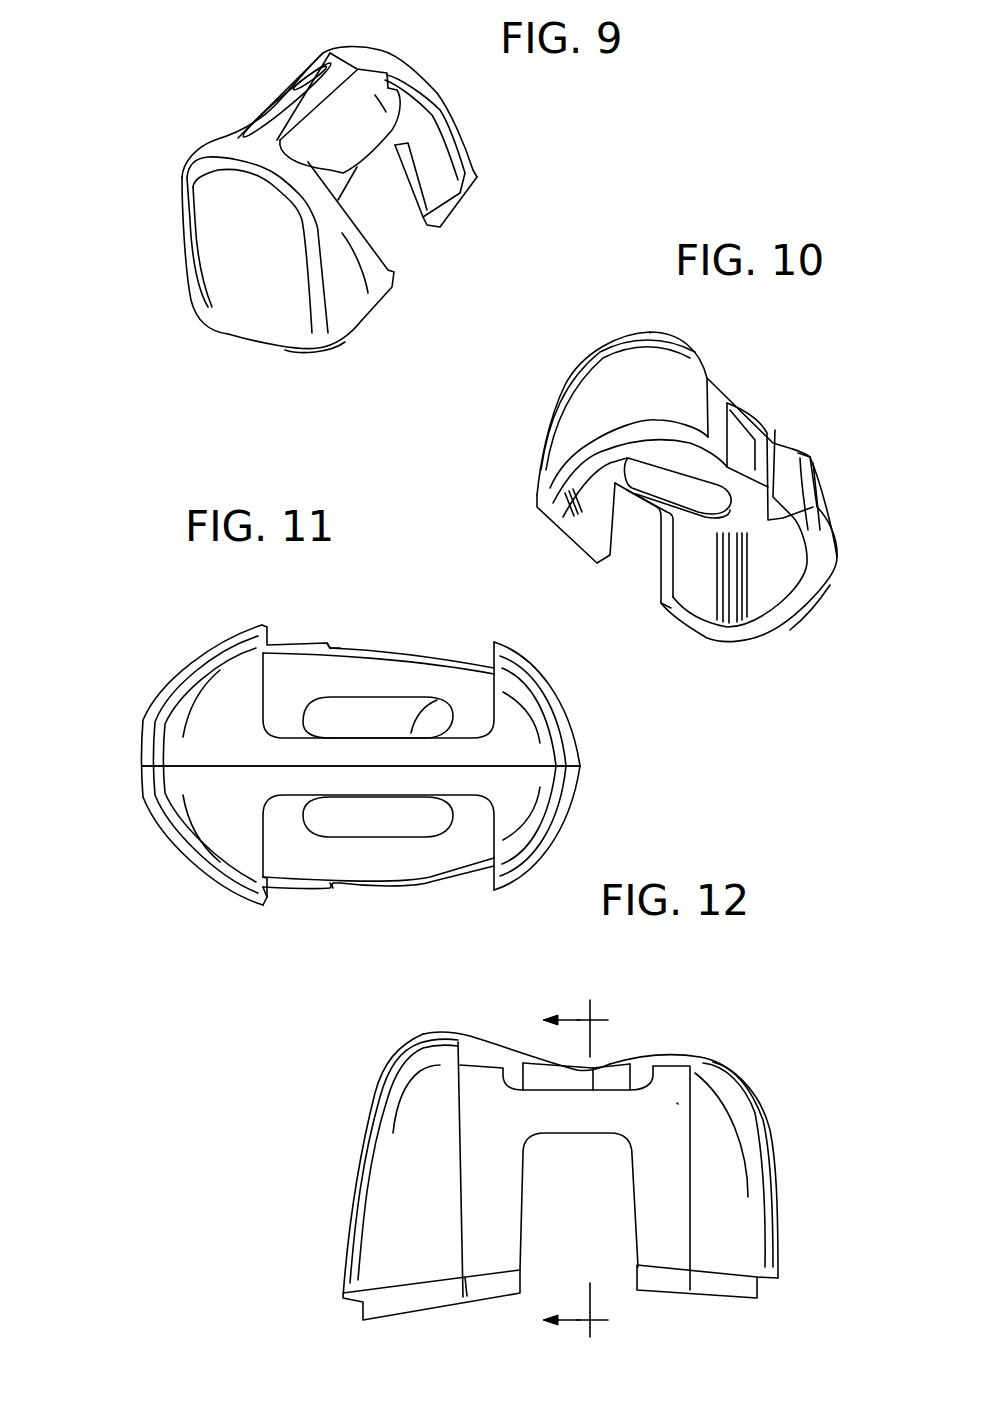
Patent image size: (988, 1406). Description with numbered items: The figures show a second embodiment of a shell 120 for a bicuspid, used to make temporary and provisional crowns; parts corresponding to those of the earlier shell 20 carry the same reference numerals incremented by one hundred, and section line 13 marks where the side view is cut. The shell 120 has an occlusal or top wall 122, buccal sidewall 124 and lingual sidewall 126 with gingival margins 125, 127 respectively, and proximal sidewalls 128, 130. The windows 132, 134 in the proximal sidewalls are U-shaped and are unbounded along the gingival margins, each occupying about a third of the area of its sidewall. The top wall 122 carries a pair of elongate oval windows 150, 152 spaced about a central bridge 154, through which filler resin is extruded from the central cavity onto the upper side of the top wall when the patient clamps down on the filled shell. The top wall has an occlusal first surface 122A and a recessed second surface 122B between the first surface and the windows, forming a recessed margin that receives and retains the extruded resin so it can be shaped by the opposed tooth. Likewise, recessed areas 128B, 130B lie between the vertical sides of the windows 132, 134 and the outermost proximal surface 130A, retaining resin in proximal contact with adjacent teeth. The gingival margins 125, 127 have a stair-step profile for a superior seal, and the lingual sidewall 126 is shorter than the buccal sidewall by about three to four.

In FIG. 10, the shell 20 is at (762, 362).
In FIG. 9, the shell 120 is at (185, 125).
In FIG. 11, the shell 120 is at (180, 622).
In FIG. 12, the shell 120 is at (701, 999).
In FIG. 9, the occlusal or top wall 122 is at (355, 62).
In FIG. 11, the occlusal or top wall 122 is at (260, 783).
In FIG. 12, the occlusal or top wall 122 is at (448, 1030).
In FIG. 11, the occlusal first surface 122A is at (274, 758).
In FIG. 12, the occlusal first surface 122A is at (707, 1080).
In FIG. 11, the recessed second surface 122B is at (331, 693).
In FIG. 12, the recessed second surface 122B is at (677, 1103).
In FIG. 9, the buccal sidewall 124 is at (207, 257).
In FIG. 10, the buccal sidewall 124 is at (557, 407).
In FIG. 11, the buccal sidewall 124 is at (144, 718).
In FIG. 12, the buccal sidewall 124 is at (355, 1163).
In FIG. 9, the gingival margin 125 is at (240, 340).
In FIG. 10, the gingival margin 125 is at (540, 507).
In FIG. 12, the gingival margin 125 is at (353, 1300).
In FIG. 9, the lingual sidewall 126 is at (450, 117).
In FIG. 10, the lingual sidewall 126 is at (825, 520).
In FIG. 11, the lingual sidewall 126 is at (578, 758).
In FIG. 12, the lingual sidewall 126 is at (778, 1190).
In FIG. 9, the gingival margin 127 is at (477, 180).
In FIG. 10, the gingival margin 127 is at (787, 610).
In FIG. 12, the gingival margin 127 is at (760, 1282).
In FIG. 9, the proximal sidewall 128 is at (365, 307).
In FIG. 10, the proximal sidewall 128 is at (680, 390).
In FIG. 12, the proximal sidewall 128 is at (437, 1177).
In FIG. 11, the recessed area 128B is at (257, 898).
In FIG. 10, the proximal sidewall 130 is at (685, 582).
In FIG. 11, the proximal sidewall 130 is at (494, 648).
In FIG. 11, the outermost proximal surface 130A is at (261, 624).
In FIG. 11, the recessed area 130B is at (293, 637).
In FIG. 9, the window 132 is at (420, 213).
In FIG. 10, the window 132 is at (775, 490).
In FIG. 11, the window 132 is at (413, 886).
In FIG. 12, the window 132 is at (632, 1213).
In FIG. 10, the window 134 is at (660, 543).
In FIG. 11, the window 134 is at (367, 633).
In FIG. 9, the window 150 is at (288, 108).
In FIG. 10, the window 150 is at (717, 448).
In FIG. 11, the window 150 is at (333, 696).
In FIG. 9, the window 152 is at (378, 100).
In FIG. 11, the window 152 is at (337, 826).
In FIG. 12, the window 152 is at (593, 1090).
In FIG. 9, the central bridge 154 is at (313, 110).
In FIG. 11, the central bridge 154 is at (411, 733).
In FIG. 12, the central bridge 154 is at (570, 1062).
In FIG. 12, the section line 13- 13 is at (588, 1173).